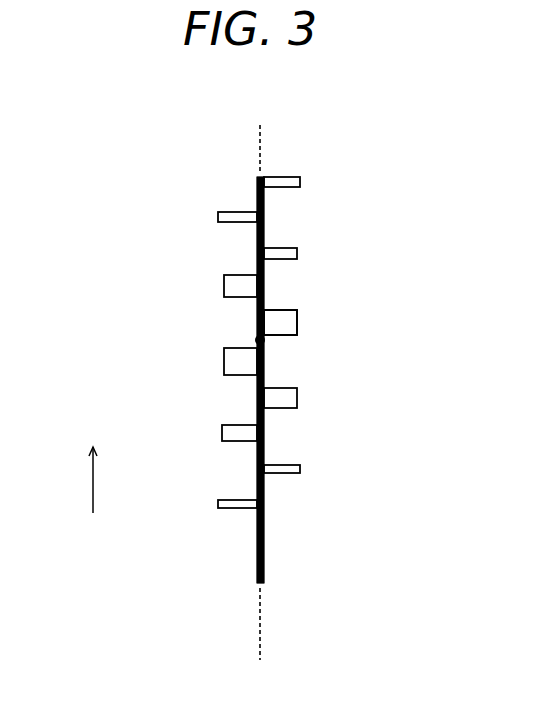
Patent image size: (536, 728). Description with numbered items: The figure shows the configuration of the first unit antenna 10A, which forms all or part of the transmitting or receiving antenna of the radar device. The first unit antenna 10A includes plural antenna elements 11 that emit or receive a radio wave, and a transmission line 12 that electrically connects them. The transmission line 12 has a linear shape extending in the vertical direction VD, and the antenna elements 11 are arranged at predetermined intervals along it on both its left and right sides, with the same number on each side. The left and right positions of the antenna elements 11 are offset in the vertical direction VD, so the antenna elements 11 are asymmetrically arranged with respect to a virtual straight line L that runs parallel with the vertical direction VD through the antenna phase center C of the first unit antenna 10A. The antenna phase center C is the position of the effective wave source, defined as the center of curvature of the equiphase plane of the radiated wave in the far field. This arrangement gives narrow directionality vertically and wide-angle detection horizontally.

The first unit antenna 10A is at (320, 168).
The antenna element 11 is at (297, 312).
The transmission line 12 is at (264, 452).
The antenna phase center C is at (255, 338).
The virtual straight line L is at (262, 612).
The vertical direction VD is at (71, 480).